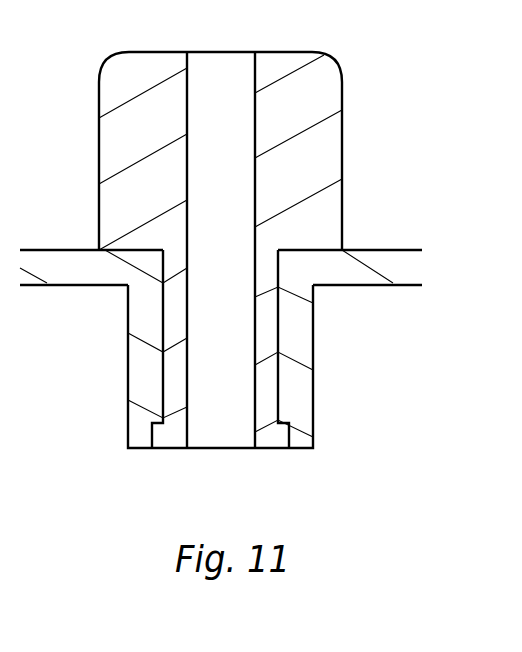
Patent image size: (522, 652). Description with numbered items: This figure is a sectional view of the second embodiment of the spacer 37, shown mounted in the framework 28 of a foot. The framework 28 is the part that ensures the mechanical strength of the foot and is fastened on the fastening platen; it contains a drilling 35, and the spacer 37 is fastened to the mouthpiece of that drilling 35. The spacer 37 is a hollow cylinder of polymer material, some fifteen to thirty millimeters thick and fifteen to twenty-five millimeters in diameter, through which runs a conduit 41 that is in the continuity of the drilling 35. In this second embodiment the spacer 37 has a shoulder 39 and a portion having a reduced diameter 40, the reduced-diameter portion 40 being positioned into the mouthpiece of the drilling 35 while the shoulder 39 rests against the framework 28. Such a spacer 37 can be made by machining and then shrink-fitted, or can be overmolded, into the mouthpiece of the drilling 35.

The framework 28 is at (68, 318).
The drilling 35 is at (160, 377).
The spacer 37 is at (303, 147).
The shoulder 39 is at (308, 250).
The portion having a reduced diameter 40 is at (265, 385).
The conduit 41 is at (203, 118).